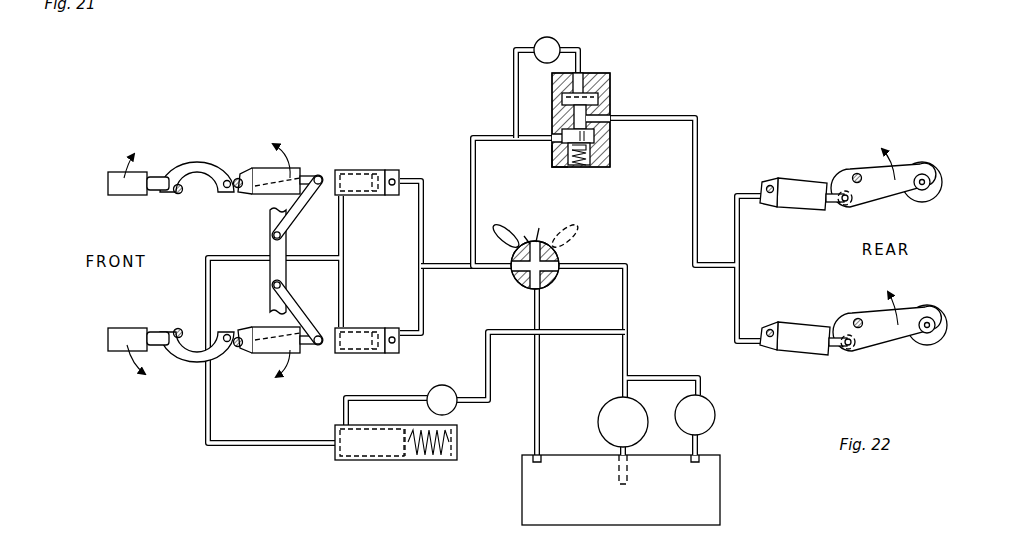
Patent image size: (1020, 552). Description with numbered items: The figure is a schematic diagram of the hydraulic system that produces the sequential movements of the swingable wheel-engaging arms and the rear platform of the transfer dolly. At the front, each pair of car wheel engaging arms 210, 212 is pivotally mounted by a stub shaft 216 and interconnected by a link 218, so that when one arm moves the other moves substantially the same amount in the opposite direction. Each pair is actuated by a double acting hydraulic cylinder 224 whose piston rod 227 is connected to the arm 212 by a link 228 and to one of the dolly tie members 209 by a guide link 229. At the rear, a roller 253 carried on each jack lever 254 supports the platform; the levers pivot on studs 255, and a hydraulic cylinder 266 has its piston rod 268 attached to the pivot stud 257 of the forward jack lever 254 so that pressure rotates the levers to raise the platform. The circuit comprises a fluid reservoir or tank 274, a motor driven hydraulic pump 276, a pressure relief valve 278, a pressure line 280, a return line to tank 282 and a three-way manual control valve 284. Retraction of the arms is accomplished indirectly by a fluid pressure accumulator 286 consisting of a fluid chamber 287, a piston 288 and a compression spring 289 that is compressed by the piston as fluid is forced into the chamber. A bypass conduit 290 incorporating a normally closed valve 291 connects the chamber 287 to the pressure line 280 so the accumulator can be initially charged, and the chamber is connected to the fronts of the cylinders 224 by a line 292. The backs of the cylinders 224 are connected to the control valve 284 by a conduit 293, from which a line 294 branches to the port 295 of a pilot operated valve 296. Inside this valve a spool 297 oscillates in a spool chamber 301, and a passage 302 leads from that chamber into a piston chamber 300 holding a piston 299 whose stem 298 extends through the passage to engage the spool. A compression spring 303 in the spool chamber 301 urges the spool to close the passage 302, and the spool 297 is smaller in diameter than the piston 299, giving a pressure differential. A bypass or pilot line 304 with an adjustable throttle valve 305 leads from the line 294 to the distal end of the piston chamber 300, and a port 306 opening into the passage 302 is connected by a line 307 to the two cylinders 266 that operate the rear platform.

The dolly tie member 209 is at (272, 248).
The arm 210 is at (108, 184).
The arm 212 is at (272, 194).
The stub shaft 216 is at (176, 193).
The link 218 is at (198, 160).
The double acting hydraulic cylinder 224 is at (365, 170).
The piston rod 227 is at (318, 174).
The link 228 is at (266, 163).
The guide link 229 is at (300, 212).
The roller 253 is at (935, 168).
The jack lever 254 is at (884, 198).
The stud 255 is at (857, 172).
The stud 257 is at (843, 204).
The hydraulic cylinder 266 is at (792, 180).
The piston rod 268 is at (835, 196).
The fluid reservoir or tank 274 is at (564, 500).
The motor driven hydraulic pump 276 is at (600, 415).
The pressure relief valve 278 is at (714, 408).
The pressure line 280 is at (629, 298).
The return line to tank 282 is at (541, 370).
The three-way manual control valve 284 is at (535, 249).
The fluid pressure accumulator 286 is at (335, 457).
The fluid chamber 287 is at (365, 450).
The piston 288 is at (404, 452).
The compression spring 289 is at (428, 458).
The bypass conduit 290 is at (566, 330).
The normally closed valve 291 is at (456, 406).
The line 292 is at (344, 268).
The conduit 293 is at (438, 264).
The line 294 is at (477, 197).
The port 295 is at (552, 151).
The pilot operated valve 296 is at (599, 72).
The spool 297 is at (596, 141).
The stem 298 is at (598, 103).
The piston 299 is at (598, 96).
The piston chamber 300 is at (568, 100).
The spool chamber 301 is at (596, 150).
The passage 302 is at (565, 135).
The compression spring 303 is at (584, 162).
The bypass or pilot line 304 is at (514, 53).
The adjustable throttle valve 305 is at (556, 37).
The port 306 is at (595, 134).
The line 307 is at (699, 126).